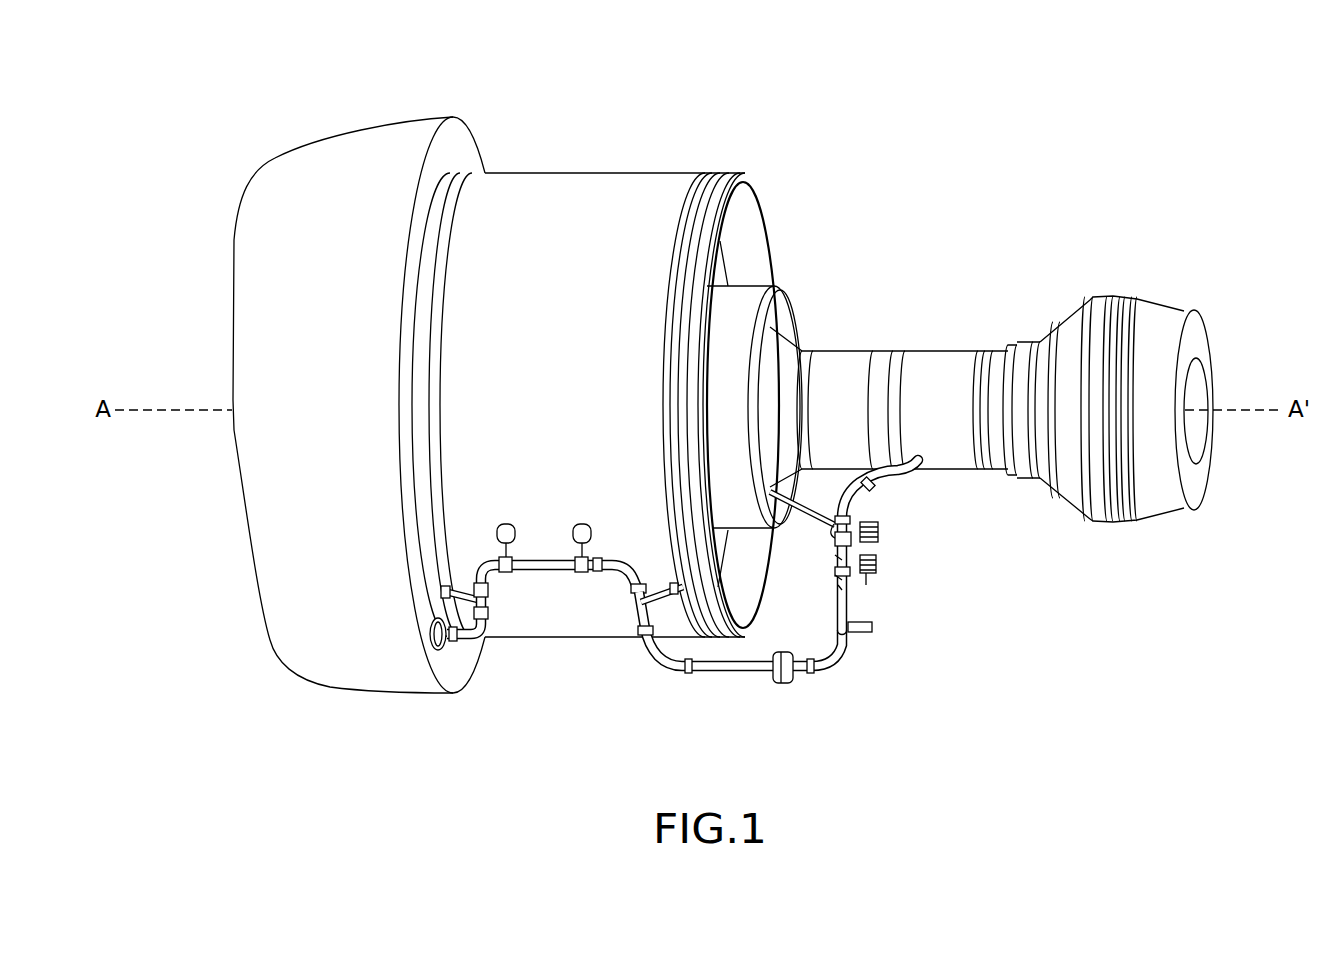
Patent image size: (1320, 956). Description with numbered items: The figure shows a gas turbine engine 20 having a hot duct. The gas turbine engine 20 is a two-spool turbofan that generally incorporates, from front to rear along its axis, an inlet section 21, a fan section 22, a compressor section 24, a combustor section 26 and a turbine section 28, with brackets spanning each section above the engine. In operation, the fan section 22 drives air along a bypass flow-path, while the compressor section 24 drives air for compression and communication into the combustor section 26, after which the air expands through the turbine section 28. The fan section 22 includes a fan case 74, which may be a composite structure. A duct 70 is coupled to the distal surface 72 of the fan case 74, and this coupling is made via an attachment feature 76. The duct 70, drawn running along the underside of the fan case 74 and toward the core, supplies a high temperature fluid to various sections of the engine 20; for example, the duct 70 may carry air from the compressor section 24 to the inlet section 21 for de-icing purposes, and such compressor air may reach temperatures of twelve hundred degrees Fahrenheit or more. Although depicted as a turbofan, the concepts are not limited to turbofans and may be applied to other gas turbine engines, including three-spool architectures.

The gas turbine engine 20 is at (1153, 120).
The inlet section 21 is at (240, 97).
The fan section 22 is at (393, 97).
The compressor section 24 is at (905, 259).
The combustor section 26 is at (915, 259).
The turbine section 28 is at (1017, 259).
The duct 70 is at (538, 563).
The surface 72 is at (572, 627).
The fan case 74 is at (620, 633).
The attachment feature 76 is at (653, 588).